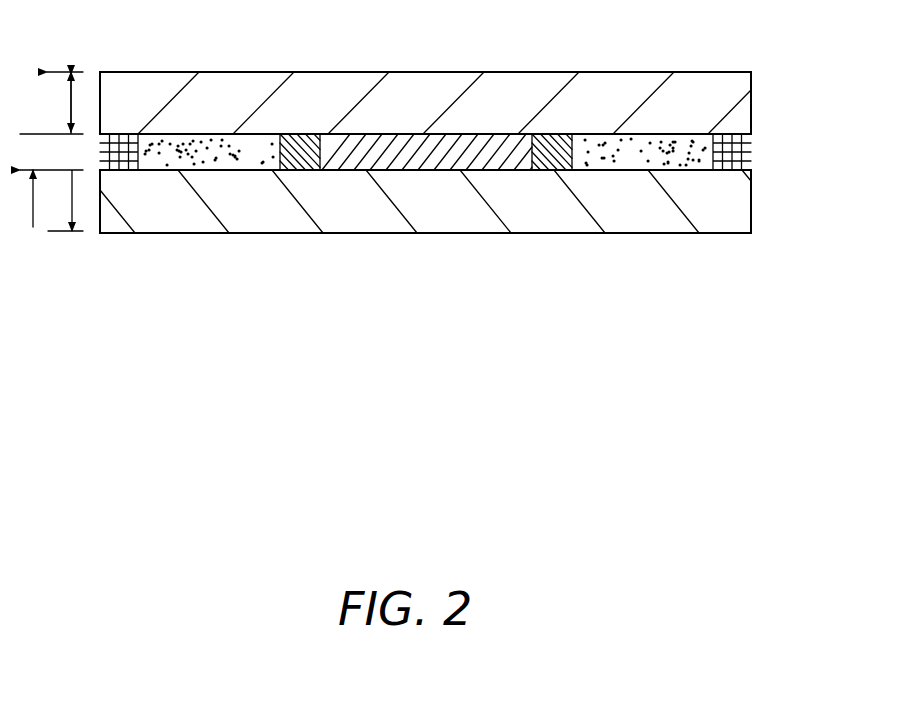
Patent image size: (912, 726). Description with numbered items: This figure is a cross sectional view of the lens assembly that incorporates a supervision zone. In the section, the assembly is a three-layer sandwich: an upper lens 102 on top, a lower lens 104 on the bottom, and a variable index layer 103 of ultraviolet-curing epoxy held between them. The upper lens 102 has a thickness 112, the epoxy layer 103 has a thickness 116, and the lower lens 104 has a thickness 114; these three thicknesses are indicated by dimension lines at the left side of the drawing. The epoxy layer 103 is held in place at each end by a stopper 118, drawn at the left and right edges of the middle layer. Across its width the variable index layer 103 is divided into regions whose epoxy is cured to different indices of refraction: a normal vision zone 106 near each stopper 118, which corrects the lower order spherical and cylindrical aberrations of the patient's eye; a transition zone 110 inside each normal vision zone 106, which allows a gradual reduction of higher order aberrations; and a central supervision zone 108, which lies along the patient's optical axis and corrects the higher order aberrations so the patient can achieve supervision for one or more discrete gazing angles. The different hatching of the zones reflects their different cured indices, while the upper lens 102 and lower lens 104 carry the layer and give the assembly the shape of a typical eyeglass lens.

The upper lens 102 is at (751, 109).
The variable index layer 103 is at (768, 154).
The lower lens 104 is at (751, 188).
The normal vision zone 106 is at (639, 413).
The supervision zone 108 is at (417, 170).
The transition zone 110 is at (553, 337).
The thickness of upper lens 112 is at (54, 103).
The thickness of lower lens 114 is at (63, 199).
The thickness of epoxy layer 116 is at (34, 134).
The stopper 118 is at (732, 487).